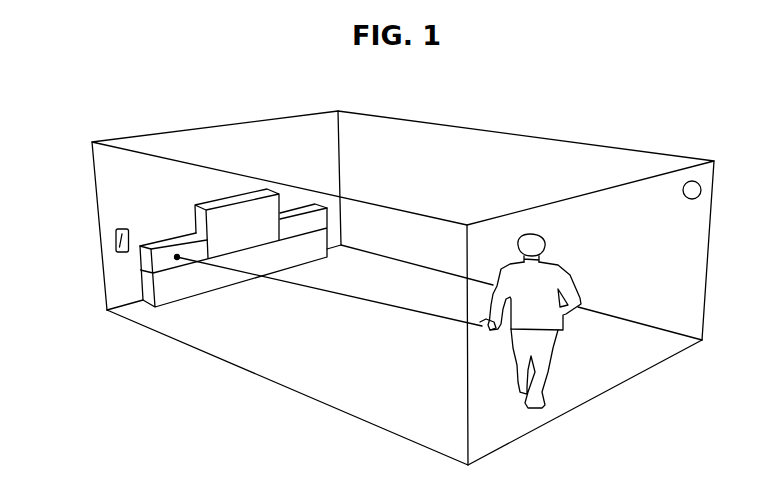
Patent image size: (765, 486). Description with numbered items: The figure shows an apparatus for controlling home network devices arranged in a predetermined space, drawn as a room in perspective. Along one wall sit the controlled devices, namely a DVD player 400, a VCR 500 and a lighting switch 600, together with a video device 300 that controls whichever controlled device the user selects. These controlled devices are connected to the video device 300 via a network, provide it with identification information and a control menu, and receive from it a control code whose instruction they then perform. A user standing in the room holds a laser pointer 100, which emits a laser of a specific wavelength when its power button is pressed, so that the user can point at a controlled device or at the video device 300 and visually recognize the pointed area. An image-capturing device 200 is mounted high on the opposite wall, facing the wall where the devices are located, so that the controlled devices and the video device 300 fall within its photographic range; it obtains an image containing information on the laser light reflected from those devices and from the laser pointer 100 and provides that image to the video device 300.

The laser pointer 100 is at (484, 324).
The image-capturing device 200 is at (688, 189).
The video device 300 is at (217, 217).
The DVD player 400 is at (299, 222).
The VCR 500 is at (161, 254).
The lighting switch 600 is at (115, 247).